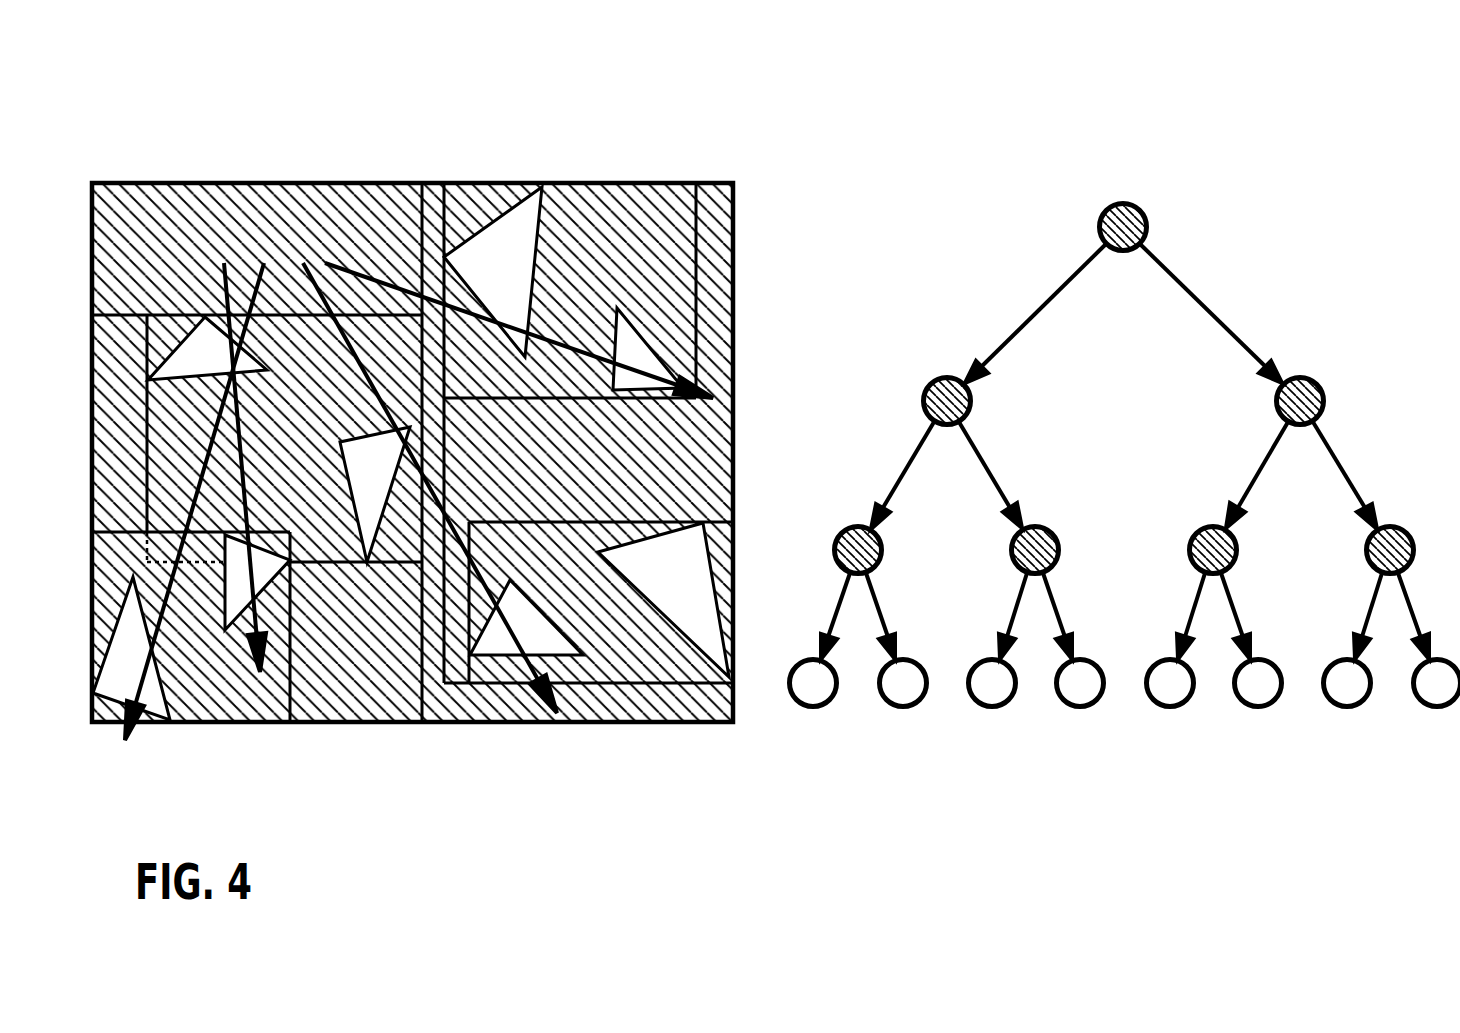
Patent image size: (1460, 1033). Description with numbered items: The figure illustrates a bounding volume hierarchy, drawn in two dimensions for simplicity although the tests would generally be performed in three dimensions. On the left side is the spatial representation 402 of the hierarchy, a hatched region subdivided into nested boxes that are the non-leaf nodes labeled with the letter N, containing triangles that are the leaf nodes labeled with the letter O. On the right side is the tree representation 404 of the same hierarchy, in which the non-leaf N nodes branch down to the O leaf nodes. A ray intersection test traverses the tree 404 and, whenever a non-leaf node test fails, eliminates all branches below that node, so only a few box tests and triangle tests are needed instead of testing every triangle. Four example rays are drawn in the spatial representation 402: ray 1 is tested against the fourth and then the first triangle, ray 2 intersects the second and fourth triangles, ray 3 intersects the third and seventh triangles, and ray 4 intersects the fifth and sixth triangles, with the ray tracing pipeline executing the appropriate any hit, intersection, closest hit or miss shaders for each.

The spatial representation 402 is at (293, 106).
The tree representation 404 is at (894, 132).
The ray 1 is at (258, 270).
The ray 2 is at (222, 270).
The ray 3 is at (308, 276).
The ray 4 is at (347, 268).